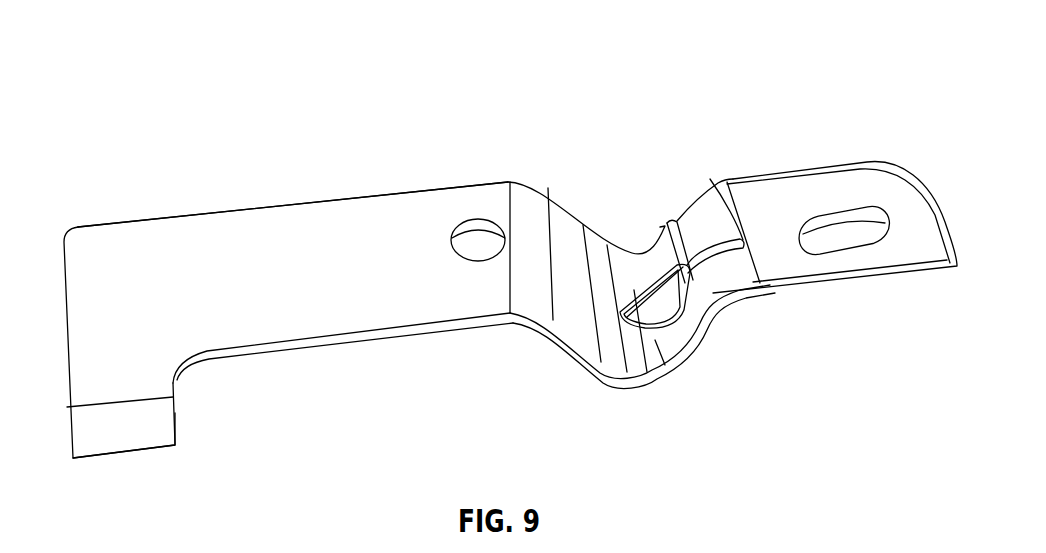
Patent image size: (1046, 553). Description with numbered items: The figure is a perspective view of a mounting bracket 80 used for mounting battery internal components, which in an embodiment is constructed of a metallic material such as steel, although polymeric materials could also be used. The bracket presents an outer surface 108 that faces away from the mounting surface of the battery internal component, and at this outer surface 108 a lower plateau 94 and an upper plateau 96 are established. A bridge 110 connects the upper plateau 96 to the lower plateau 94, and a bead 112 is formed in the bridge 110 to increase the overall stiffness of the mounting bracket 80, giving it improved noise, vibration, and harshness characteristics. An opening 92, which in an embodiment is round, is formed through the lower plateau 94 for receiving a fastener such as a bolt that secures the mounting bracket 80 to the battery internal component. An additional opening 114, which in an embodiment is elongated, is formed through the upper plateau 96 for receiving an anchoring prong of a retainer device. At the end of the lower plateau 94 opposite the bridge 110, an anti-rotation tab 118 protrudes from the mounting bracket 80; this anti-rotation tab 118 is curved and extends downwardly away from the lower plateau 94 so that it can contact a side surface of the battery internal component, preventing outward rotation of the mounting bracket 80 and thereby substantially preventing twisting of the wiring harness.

The mounting bracket 80 is at (499, 286).
The opening 92 is at (478, 238).
The lower plateau 94 is at (360, 210).
The upper plateau 96 is at (815, 183).
The outer surface 108 is at (191, 236).
The bridge 110 is at (675, 332).
The bead 112 is at (647, 293).
The opening 114 is at (865, 230).
The anti-rotation tab 118 is at (120, 447).